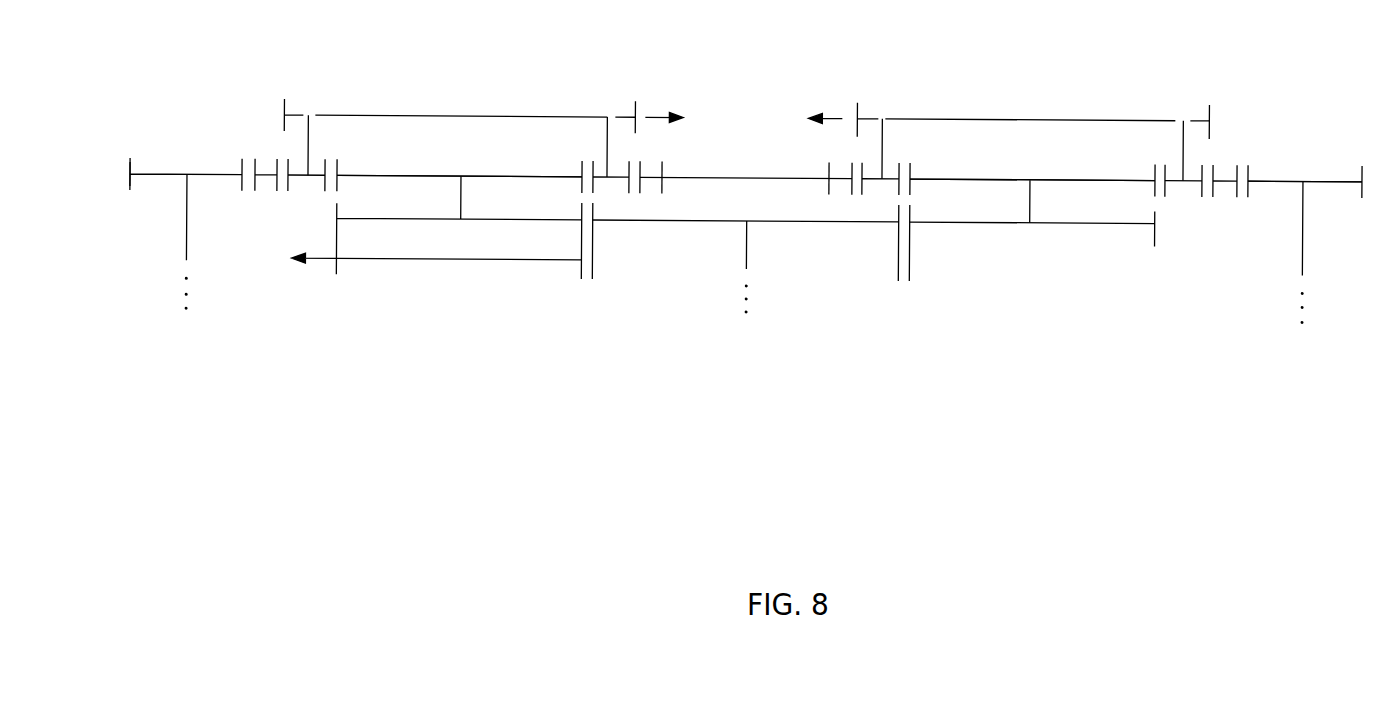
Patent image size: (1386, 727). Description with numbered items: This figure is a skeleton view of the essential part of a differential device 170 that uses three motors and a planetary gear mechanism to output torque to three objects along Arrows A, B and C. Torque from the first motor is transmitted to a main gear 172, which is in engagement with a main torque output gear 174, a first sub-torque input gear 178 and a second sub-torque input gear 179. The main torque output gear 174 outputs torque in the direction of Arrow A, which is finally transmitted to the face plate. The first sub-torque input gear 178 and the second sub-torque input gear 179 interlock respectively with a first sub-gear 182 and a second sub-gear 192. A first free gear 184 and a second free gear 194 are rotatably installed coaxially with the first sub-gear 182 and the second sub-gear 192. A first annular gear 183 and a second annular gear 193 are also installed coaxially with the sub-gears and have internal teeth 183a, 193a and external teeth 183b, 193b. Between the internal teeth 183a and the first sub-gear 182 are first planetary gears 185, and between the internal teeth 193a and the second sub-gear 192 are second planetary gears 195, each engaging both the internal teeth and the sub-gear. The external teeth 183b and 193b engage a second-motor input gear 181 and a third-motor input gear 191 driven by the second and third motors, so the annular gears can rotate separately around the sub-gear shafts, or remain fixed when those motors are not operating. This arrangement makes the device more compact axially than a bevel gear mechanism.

The differential device 170 is at (746, 272).
The main gear 172 is at (705, 220).
The main torque output gear 174 is at (413, 258).
The first sub-torque input gear 178 is at (520, 218).
The second sub-torque input gear 179 is at (970, 222).
The M2 input gear 181 is at (163, 174).
The first sub-gear 182 is at (402, 173).
The first annular gear 183 is at (269, 175).
The internal teeth of first annular gear 183a is at (645, 182).
The external teeth of first annular gear 183b is at (664, 182).
The first free gear 184 is at (553, 114).
The first planetary gear 185 is at (317, 176).
The M3 input gear 191 is at (1333, 178).
The second sub-gear 192 is at (1065, 180).
The second annular gear 193 is at (1226, 174).
The internal teeth of second annular gear 193a is at (845, 182).
The external teeth of second annular gear 193b is at (828, 165).
The second free gear 194 is at (1125, 114).
The second planetary gear 195 is at (1187, 184).